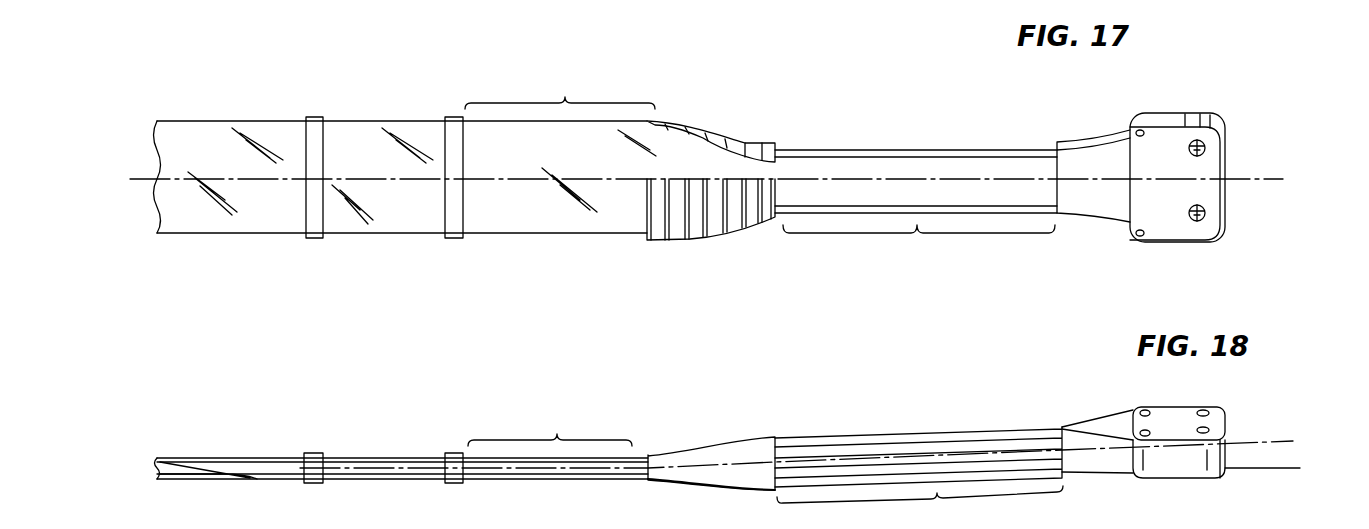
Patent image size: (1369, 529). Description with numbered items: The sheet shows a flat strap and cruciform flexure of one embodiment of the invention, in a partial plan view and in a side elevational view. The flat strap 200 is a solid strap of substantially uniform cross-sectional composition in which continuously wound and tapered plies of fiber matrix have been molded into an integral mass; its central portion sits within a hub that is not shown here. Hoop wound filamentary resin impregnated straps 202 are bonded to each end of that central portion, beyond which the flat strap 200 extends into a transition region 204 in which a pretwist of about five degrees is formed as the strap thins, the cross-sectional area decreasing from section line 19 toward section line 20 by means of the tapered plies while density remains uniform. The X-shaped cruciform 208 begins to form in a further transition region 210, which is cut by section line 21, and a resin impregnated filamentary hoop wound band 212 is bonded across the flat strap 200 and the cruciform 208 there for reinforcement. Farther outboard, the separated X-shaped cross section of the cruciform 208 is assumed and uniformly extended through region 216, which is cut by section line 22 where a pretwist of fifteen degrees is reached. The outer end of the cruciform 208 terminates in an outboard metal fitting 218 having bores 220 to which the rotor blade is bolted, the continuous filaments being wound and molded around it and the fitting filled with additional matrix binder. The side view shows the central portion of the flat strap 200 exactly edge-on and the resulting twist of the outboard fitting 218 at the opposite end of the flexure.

In FIG. 17, the flat strap 200 is at (372, 130).
In FIG. 18, the flat strap 200 is at (385, 444).
In FIG. 17, the hoop wound filamentary resin impregnated straps 202 is at (313, 240).
In FIG. 18, the hoop wound filamentary resin impregnated straps 202 is at (316, 483).
In FIG. 17, the transition region 204 is at (560, 90).
In FIG. 18, the transition region 204 is at (550, 422).
In FIG. 17, the X-shaped cruciform 208 is at (978, 138).
In FIG. 18, the X-shaped cruciform 208 is at (922, 408).
In FIG. 17, the transition region 210 is at (652, 252).
In FIG. 18, the transition region 210 is at (772, 398).
In FIG. 17, the resin impregnated filamentary hoop wound band 212 is at (698, 120).
In FIG. 18, the resin impregnated filamentary hoop wound band 212 is at (712, 480).
In FIG. 17, the region 216 is at (919, 246).
In FIG. 18, the region 216 is at (920, 507).
In FIG. 17, the outboard fitting 218 is at (1195, 103).
In FIG. 18, the outboard fitting 218 is at (1185, 393).
In FIG. 17, the bores 220 is at (1203, 208).
In FIG. 18, the bores 220 is at (1205, 432).
In FIG. 17, the section line 19- 19 is at (479, 93).
In FIG. 17, the section line 20- 20 is at (617, 92).
In FIG. 17, the section line 21- 21 is at (710, 110).
In FIG. 17, the section line 22- 22 is at (894, 130).